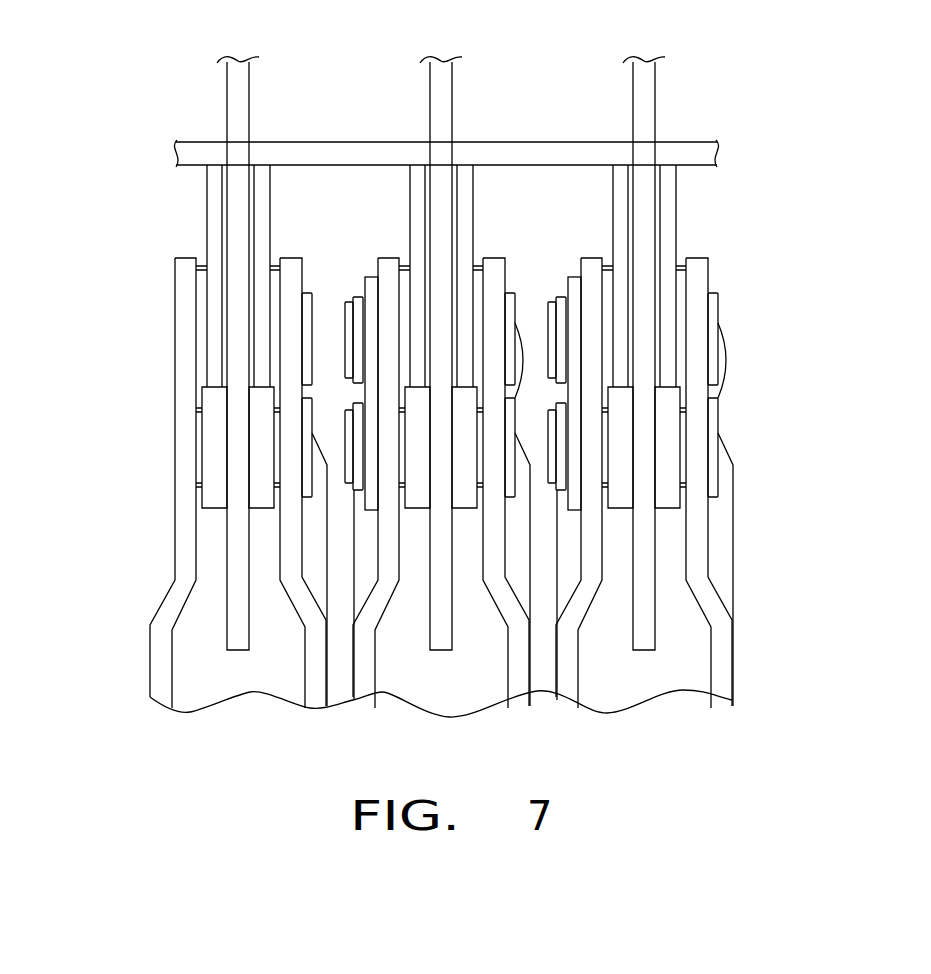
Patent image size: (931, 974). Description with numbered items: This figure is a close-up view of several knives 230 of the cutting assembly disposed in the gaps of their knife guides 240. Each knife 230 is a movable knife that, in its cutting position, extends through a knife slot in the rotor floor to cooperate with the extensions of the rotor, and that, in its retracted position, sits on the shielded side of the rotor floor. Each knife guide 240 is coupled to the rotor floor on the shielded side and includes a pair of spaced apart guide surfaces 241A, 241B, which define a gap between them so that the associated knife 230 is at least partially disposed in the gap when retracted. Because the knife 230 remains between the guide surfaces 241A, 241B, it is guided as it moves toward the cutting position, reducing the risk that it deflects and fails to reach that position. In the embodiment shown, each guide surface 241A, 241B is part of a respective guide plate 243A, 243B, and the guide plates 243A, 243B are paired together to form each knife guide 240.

The knife 230 is at (238, 640).
The knife guide 240 is at (200, 200).
The guide surface 241A is at (223, 225).
The guide surface 241B is at (253, 192).
The guide plate 243A is at (213, 325).
The guide plate 243B is at (263, 250).